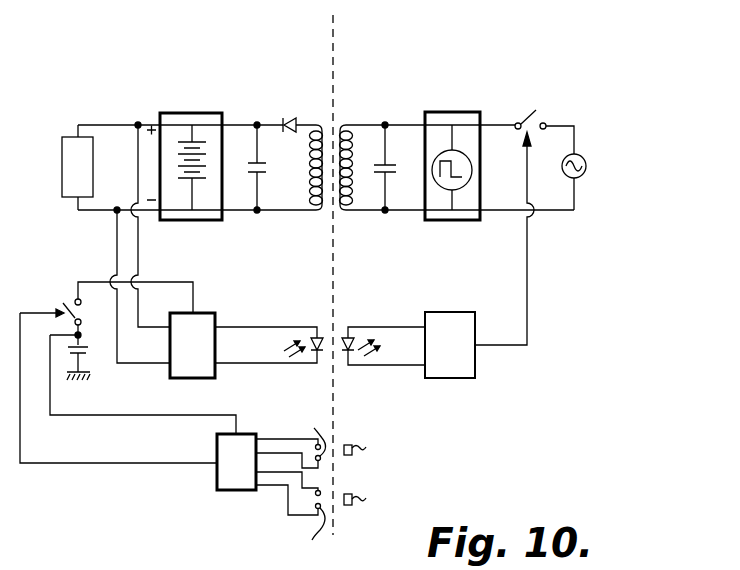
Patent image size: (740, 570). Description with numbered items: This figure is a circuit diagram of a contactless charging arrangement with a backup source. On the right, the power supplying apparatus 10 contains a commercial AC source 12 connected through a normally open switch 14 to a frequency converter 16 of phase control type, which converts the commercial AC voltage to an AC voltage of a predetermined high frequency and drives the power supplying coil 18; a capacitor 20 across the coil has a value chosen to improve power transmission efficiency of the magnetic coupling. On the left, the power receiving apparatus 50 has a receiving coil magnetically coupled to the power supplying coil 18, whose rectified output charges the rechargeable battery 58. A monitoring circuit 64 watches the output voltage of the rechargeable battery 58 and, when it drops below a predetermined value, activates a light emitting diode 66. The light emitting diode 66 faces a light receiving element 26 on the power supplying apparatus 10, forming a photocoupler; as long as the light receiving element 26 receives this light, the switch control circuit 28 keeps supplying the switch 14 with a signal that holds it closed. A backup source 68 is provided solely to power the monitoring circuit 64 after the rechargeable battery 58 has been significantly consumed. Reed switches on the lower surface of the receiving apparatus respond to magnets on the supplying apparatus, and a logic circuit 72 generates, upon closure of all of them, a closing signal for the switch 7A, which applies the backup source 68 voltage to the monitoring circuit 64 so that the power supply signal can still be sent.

The power supplying apparatus 10 is at (355, 62).
The commercial AC source 12 is at (587, 165).
The normally open switch 14 is at (530, 112).
The frequency converter 16 is at (455, 110).
The power supplying coil 18 is at (355, 128).
The capacitor 20 is at (390, 165).
The light receiving element 26 is at (348, 352).
The switch control circuit 28 is at (447, 310).
The power receiving apparatus 50 is at (316, 62).
The rechargeable battery 58 is at (205, 112).
The monitoring circuit 64 is at (197, 380).
The light emitting diode 66 is at (318, 352).
The backup source 68 is at (90, 352).
The switch 7A is at (79, 309).
The logic circuit 72 is at (232, 492).